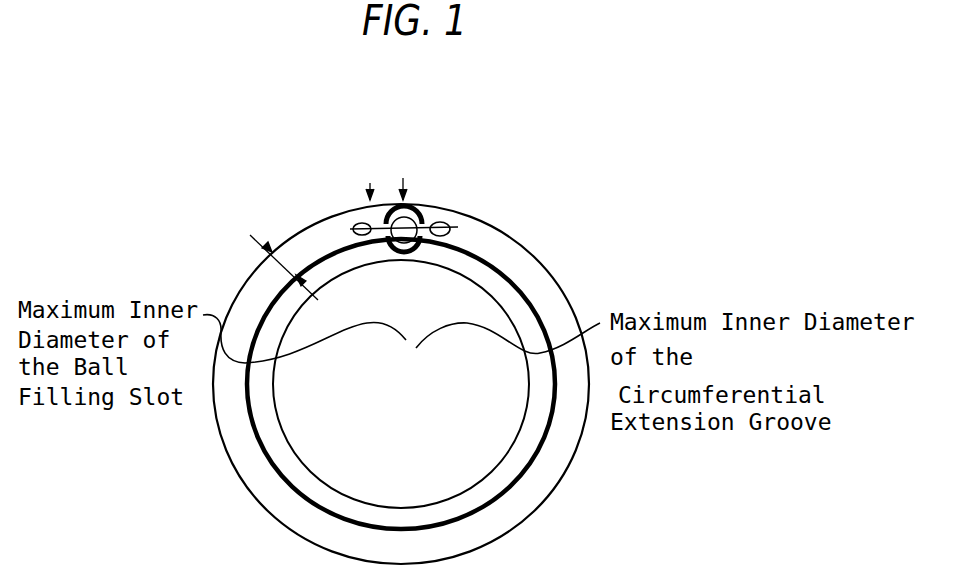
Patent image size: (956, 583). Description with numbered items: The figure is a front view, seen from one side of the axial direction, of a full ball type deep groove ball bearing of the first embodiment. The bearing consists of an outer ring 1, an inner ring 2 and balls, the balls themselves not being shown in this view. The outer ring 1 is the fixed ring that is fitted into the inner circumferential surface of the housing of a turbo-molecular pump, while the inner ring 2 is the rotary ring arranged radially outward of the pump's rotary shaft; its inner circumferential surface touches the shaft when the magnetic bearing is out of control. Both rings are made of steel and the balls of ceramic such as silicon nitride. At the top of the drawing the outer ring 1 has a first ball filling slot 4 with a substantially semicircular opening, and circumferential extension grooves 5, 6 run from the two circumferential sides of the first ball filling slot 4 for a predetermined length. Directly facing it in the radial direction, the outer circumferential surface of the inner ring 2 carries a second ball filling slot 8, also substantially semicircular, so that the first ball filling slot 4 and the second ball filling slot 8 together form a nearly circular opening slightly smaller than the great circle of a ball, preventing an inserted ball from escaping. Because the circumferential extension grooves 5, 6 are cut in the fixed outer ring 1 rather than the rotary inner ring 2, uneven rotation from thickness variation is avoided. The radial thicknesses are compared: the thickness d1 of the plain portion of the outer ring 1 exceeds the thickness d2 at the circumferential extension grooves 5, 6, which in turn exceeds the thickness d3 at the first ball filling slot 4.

The outer ring 1 is at (550, 293).
The inner ring 2 is at (535, 436).
The first ball filling slot 4 is at (380, 232).
The circumferential extension groove 5 is at (362, 235).
The circumferential extension groove 6 is at (443, 227).
The second ball filling slot 8 is at (407, 200).
The thickness d1 is at (290, 252).
The thickness d2 is at (377, 223).
The thickness d3 is at (423, 223).